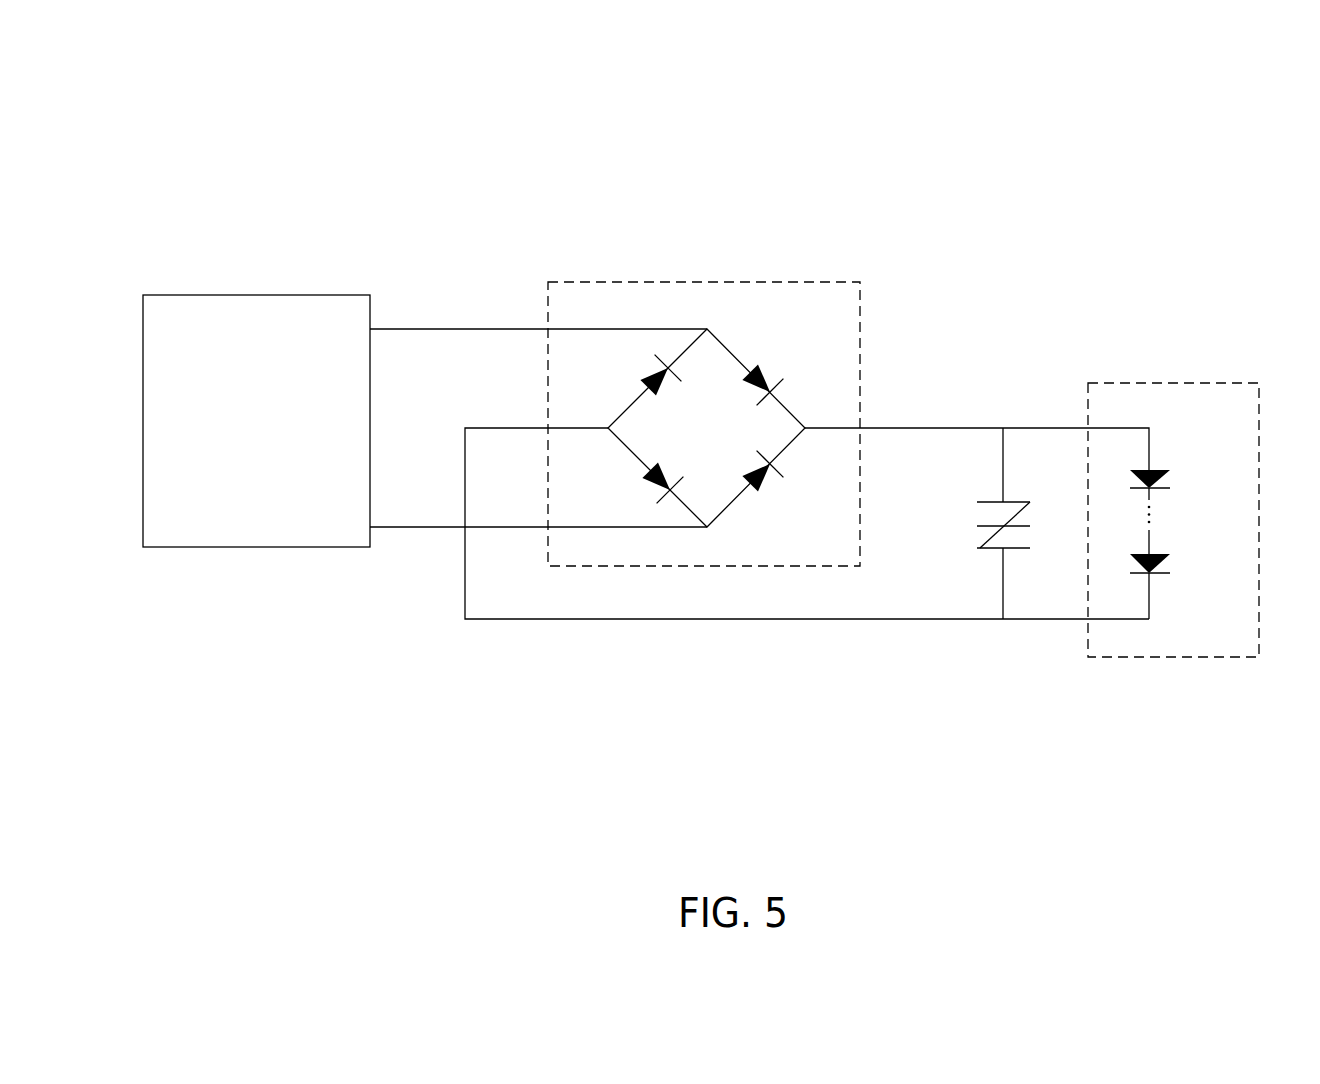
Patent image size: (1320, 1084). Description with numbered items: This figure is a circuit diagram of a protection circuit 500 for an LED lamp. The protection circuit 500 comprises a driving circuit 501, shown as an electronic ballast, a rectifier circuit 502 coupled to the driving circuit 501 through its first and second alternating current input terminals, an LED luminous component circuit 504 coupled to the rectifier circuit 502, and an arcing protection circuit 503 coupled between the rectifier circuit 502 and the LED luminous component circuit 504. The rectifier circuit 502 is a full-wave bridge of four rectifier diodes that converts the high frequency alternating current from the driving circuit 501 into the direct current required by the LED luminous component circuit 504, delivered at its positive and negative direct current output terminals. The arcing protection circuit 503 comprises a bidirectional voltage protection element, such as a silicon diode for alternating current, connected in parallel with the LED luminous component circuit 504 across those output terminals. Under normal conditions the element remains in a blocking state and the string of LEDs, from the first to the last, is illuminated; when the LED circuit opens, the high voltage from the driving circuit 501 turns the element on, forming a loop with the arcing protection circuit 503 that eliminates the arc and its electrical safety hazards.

The protection circuit 500 is at (400, 117).
The driving circuit 501 is at (277, 295).
The rectifier circuit 502 is at (712, 282).
The arcing protection circuit 503 is at (1010, 502).
The LED luminous component circuit 504 is at (1143, 382).